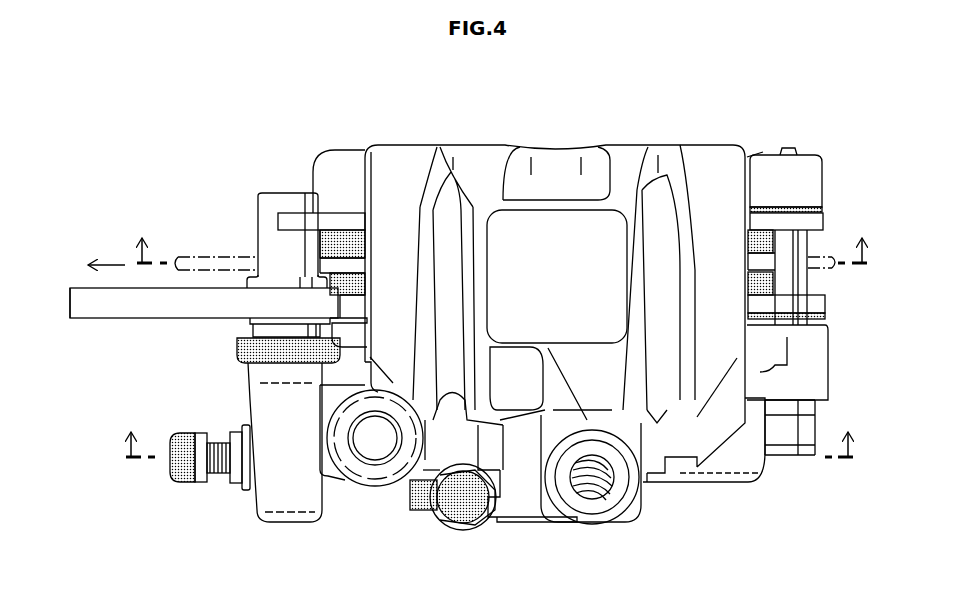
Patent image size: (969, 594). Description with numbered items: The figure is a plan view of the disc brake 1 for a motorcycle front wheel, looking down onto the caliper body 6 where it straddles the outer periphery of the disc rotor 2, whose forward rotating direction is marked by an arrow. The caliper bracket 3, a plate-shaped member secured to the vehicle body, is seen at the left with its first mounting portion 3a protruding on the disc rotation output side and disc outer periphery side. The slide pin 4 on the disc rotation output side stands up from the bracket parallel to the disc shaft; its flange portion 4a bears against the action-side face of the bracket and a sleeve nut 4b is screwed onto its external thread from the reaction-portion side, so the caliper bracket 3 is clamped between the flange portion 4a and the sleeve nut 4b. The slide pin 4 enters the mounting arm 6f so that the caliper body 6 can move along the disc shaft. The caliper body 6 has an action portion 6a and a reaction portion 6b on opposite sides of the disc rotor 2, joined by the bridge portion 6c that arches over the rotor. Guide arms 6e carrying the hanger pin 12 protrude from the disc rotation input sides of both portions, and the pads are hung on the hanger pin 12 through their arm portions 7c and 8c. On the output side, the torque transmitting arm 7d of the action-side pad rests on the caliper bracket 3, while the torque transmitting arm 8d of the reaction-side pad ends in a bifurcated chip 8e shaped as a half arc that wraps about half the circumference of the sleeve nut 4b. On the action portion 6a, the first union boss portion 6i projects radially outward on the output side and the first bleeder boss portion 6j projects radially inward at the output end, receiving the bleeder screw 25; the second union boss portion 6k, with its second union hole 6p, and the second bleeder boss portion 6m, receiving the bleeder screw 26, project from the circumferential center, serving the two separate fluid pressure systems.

The disc brake 1 is at (543, 105).
The disc rotor 2 is at (195, 257).
The caliper bracket 3 is at (148, 325).
The first mounting portion 3a is at (78, 318).
The slide pin 4 is at (280, 337).
The flange portion 4a is at (252, 322).
The sleeve nut 4b is at (280, 195).
The caliper body 6 is at (720, 494).
The action portion 6a is at (678, 470).
The reaction portion 6b is at (697, 146).
The bridge portion 6c is at (652, 272).
The guide arm 6e is at (817, 175).
The mounting arm 6f is at (283, 505).
The first union boss portion 6i is at (372, 487).
The first bleeder boss portion 6j is at (250, 487).
The second union boss portion 6k is at (583, 522).
The second bleeder boss portion 6m is at (500, 518).
The second union hole 6p is at (597, 503).
The arm portion 7c is at (820, 304).
The torque transmitting arm 7d is at (358, 304).
The arm portion 8c is at (818, 221).
The torque transmitting arm 8d is at (340, 222).
The bifurcated chip 8e is at (278, 222).
The hanger pin 12 is at (798, 275).
The bleeder screw 25 is at (220, 443).
The bleeder screw 26 is at (480, 517).